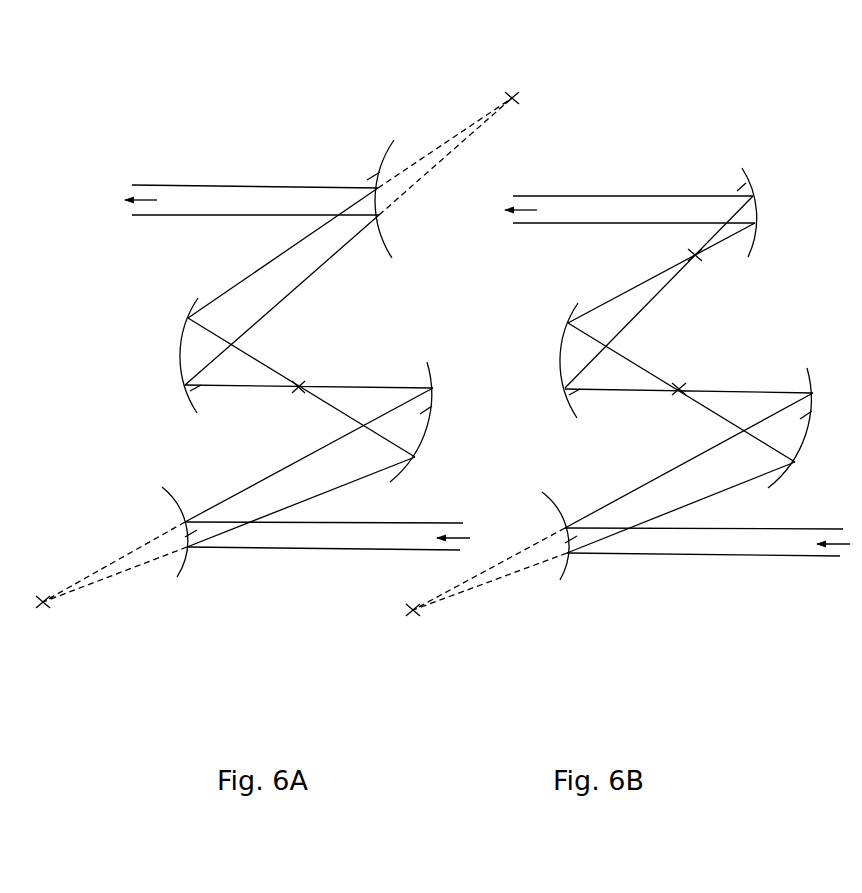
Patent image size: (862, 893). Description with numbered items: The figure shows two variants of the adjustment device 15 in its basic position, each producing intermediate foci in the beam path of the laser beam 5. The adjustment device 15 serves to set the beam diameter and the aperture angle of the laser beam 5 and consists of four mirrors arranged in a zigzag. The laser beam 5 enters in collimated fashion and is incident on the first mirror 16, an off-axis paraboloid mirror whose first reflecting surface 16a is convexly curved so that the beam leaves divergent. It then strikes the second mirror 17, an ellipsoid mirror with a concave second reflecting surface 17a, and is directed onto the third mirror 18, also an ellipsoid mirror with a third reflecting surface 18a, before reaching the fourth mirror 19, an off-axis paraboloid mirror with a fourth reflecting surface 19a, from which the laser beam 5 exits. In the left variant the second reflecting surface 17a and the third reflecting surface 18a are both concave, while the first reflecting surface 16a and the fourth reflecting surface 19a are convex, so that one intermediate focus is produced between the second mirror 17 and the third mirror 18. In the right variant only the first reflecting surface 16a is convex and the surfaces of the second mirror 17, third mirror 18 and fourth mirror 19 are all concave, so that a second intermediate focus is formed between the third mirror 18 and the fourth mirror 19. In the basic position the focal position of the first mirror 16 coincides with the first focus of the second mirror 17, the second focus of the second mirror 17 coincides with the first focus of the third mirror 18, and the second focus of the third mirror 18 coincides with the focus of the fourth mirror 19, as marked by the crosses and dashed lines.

In FIG. 6A, the adjustment device 15 is at (258, 87).
In FIG. 6B, the adjustment device 15 is at (640, 92).
In FIG. 6A, the laser beam 5 is at (443, 523).
In FIG. 6B, the laser beam 5 is at (823, 529).
In FIG. 6A, the first mirror 16 is at (178, 498).
In FIG. 6B, the first mirror 16 is at (557, 505).
In FIG. 6A, the first reflecting surface 16a is at (190, 553).
In FIG. 6B, the first reflecting surface 16a is at (570, 558).
In FIG. 6A, the second mirror 17 is at (435, 360).
In FIG. 6B, the second mirror 17 is at (815, 365).
In FIG. 6A, the second reflecting surface 17a is at (428, 400).
In FIG. 6B, the second reflecting surface 17a is at (808, 405).
In FIG. 6A, the third mirror 18 is at (173, 320).
In FIG. 6B, the third mirror 18 is at (553, 325).
In FIG. 6A, the third reflecting surface 18a is at (192, 395).
In FIG. 6B, the third reflecting surface 18a is at (572, 400).
In FIG. 6A, the fourth mirror 19 is at (403, 141).
In FIG. 6B, the fourth mirror 19 is at (757, 171).
In FIG. 6A, the fourth reflecting surface 19a is at (375, 175).
In FIG. 6B, the fourth reflecting surface 19a is at (748, 190).